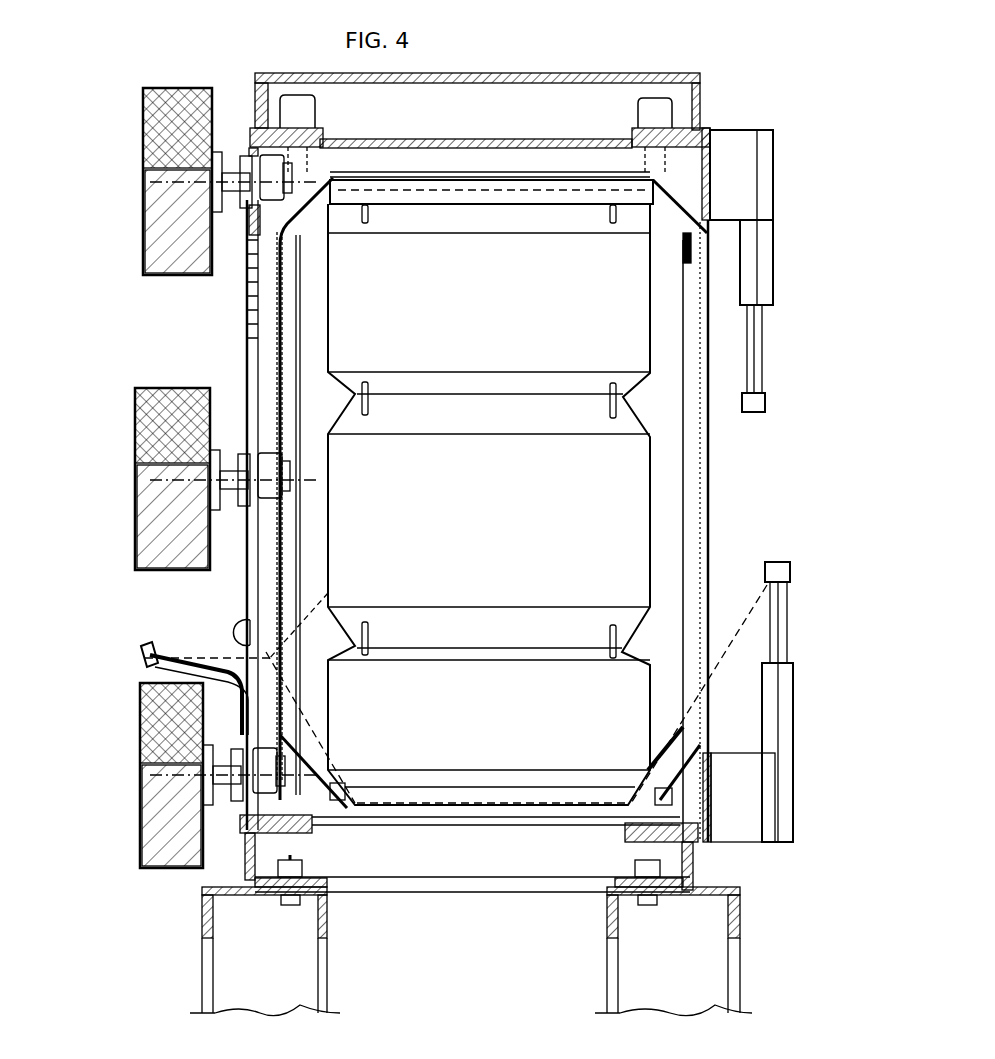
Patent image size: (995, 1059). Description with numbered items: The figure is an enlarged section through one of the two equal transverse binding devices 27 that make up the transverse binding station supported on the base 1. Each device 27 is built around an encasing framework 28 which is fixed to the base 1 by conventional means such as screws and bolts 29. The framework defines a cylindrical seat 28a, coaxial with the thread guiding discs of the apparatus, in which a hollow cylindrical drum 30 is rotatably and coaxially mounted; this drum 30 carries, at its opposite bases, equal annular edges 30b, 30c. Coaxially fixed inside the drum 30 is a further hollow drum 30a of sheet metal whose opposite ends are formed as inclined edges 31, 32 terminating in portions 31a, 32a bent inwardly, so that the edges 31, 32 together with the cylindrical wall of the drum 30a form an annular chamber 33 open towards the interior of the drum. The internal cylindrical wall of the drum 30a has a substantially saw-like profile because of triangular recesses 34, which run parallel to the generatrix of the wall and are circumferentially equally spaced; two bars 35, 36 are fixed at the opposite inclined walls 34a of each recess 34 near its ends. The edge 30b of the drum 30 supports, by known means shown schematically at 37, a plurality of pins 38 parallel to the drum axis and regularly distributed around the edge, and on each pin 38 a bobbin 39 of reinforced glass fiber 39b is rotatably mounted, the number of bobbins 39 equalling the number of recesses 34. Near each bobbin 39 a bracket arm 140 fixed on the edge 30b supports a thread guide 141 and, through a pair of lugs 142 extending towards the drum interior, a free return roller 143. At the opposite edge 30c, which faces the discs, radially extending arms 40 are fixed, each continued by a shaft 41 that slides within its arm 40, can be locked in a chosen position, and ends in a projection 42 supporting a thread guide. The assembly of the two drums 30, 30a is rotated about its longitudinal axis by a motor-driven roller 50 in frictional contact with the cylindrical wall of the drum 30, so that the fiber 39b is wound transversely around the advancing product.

The base 1 is at (228, 898).
The transverse binding device 27 is at (736, 96).
The encasing framework 28 is at (466, 73).
The cylindrical seat 28a is at (290, 876).
The screws and bolts 29 is at (285, 905).
The hollow cylindrical drum 30 is at (478, 138).
The hollow drum of sheet metal 30a is at (540, 172).
The annular edge 30b is at (252, 240).
The annular edge 30c is at (712, 192).
The inclined edge 31 is at (655, 240).
The inwardly bent portion 31a is at (688, 255).
The inclined edge 32 is at (305, 215).
The inwardly bent portion 32a is at (288, 248).
The annular chamber 33 is at (338, 192).
The triangular recess 34 is at (572, 210).
The inclined wall 34a is at (522, 390).
The bar 35 is at (612, 218).
The bar 36 is at (368, 218).
The pin supporting means 37 is at (247, 336).
The pin 38 is at (236, 170).
The bobbin 39 is at (172, 262).
The reinforced glass fiber 39b is at (213, 656).
The arm 40 is at (755, 242).
The shaft 41 is at (758, 332).
The projection 42 is at (765, 403).
The roller 50 is at (297, 108).
The bracket arm 140 is at (278, 665).
The thread guide 141 is at (146, 645).
The lug 142 is at (258, 642).
The free return roller 143 is at (318, 620).